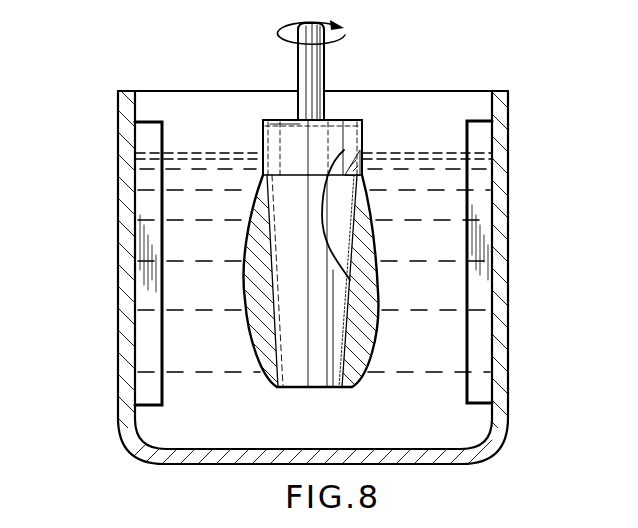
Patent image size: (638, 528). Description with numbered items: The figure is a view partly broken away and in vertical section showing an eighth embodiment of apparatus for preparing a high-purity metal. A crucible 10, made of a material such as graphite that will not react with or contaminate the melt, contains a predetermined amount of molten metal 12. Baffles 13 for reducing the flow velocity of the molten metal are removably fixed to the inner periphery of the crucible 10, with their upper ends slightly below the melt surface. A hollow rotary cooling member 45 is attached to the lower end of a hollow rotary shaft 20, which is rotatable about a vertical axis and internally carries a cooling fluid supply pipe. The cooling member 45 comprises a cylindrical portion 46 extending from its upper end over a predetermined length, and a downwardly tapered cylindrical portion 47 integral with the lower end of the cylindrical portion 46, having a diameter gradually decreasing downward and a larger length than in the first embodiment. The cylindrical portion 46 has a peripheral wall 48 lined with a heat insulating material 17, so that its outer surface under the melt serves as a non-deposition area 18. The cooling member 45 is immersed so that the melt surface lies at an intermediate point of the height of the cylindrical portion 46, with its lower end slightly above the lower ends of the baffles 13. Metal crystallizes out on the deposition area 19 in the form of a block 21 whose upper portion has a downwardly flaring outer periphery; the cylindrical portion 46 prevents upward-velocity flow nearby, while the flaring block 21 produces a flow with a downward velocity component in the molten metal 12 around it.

The crucible 10 is at (508, 298).
The molten metal 12 is at (434, 420).
The baffles 13 is at (147, 365).
The heat insulating material 17 is at (358, 172).
The non-deposition area 18 is at (262, 163).
The deposition area 19 is at (262, 292).
The hollow rotary shaft 20 is at (311, 73).
The metal block 21 is at (376, 327).
The hollow rotary cooling member 45 is at (328, 386).
The cylindrical portion 46 is at (284, 152).
The downwardly tapered cylindrical portion 47 is at (297, 355).
The peripheral wall 48 is at (366, 165).